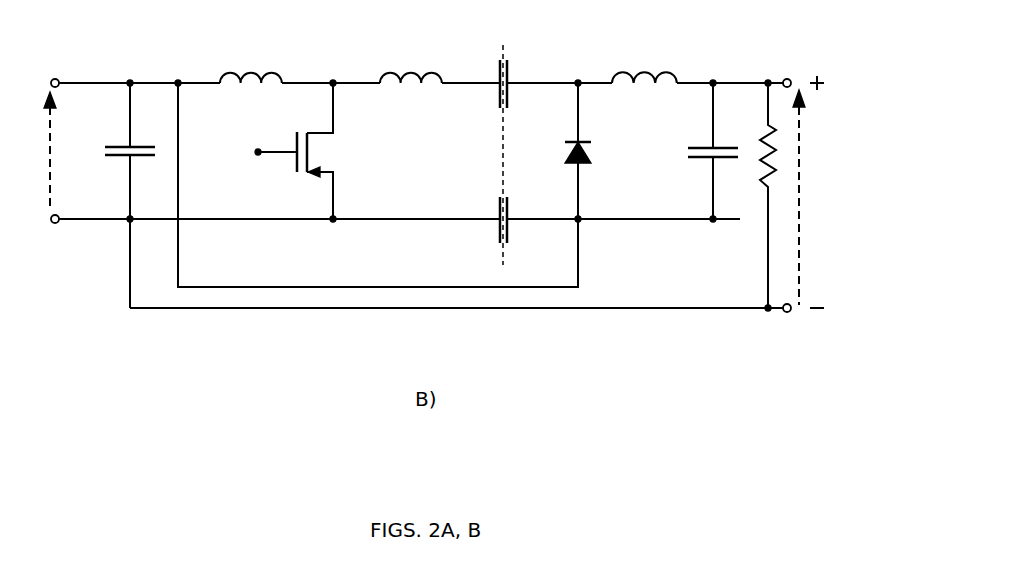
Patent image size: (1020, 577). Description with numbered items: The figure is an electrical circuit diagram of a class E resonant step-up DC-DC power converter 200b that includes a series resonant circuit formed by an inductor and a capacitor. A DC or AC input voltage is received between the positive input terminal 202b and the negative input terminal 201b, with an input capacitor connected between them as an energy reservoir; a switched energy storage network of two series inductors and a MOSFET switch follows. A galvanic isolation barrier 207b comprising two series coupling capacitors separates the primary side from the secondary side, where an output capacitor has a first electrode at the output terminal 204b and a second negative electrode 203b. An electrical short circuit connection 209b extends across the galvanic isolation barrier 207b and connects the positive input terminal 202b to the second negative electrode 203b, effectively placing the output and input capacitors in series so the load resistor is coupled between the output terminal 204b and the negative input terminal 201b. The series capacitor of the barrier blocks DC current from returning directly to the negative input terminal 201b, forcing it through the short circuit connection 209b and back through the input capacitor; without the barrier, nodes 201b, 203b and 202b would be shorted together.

The class E resonant step-up DC-DC power converter 200b is at (137, 372).
The negative input terminal 201b is at (56, 225).
The positive input terminal 202b is at (58, 78).
The second negative electrode of the output capacitor 203b is at (710, 224).
The output terminal 204b is at (783, 76).
The galvanic isolation barrier 207b is at (515, 45).
The electrical short circuit connection 209b is at (397, 283).